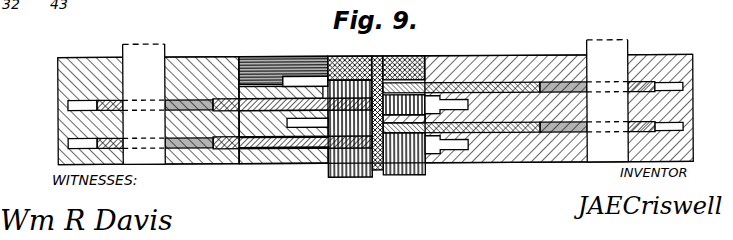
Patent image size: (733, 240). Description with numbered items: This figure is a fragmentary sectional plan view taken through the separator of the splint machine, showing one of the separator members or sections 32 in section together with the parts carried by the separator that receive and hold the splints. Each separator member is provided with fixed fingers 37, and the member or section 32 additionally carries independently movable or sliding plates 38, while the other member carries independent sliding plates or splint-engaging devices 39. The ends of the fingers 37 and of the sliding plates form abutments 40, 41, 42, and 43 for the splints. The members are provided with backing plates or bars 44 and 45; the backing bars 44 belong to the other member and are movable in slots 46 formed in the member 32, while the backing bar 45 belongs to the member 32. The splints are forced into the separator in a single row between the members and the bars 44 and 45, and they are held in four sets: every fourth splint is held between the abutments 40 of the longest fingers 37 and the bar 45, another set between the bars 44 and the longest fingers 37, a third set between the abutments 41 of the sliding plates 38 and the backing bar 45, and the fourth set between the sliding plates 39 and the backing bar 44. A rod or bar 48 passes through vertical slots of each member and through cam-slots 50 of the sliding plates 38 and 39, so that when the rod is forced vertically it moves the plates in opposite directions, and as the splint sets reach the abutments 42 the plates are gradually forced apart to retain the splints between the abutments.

The member or section of the separator 32 is at (355, 109).
The fixed fingers 37 is at (313, 162).
The sliding plates 38 is at (272, 150).
The sliding plates or splint-engaging devices 39 is at (462, 82).
The abutments 40 is at (433, 125).
The abutments 41 is at (378, 170).
The abutments 42 is at (345, 72).
The abutments 43 is at (300, 80).
The backing plates or bars 44 is at (350, 176).
The backing plate or bar 45 is at (418, 176).
The slots 46 is at (258, 68).
The rod or bar 48 is at (165, 49).
The cam-slots 50 is at (197, 148).